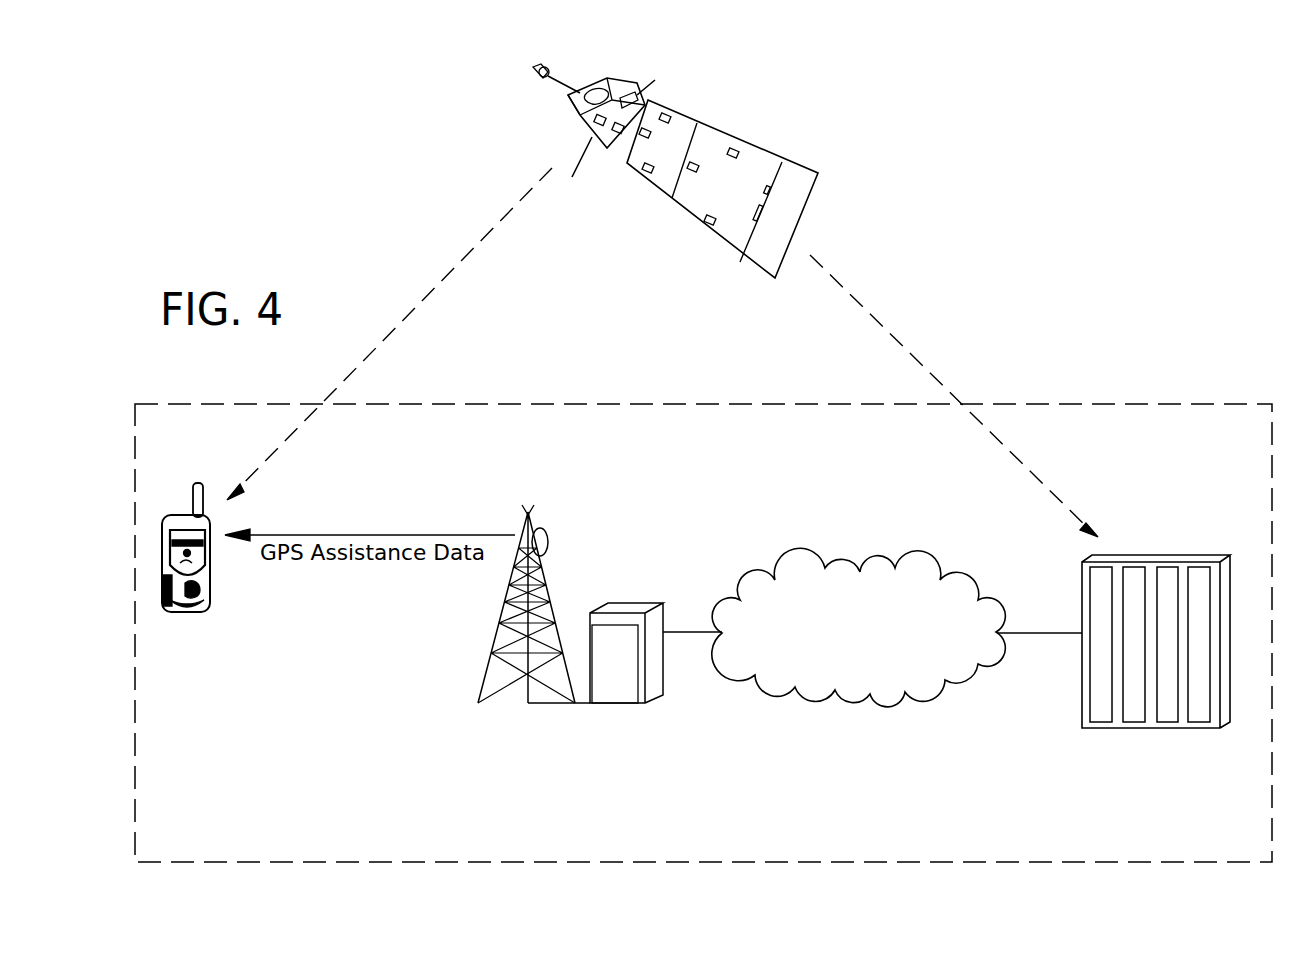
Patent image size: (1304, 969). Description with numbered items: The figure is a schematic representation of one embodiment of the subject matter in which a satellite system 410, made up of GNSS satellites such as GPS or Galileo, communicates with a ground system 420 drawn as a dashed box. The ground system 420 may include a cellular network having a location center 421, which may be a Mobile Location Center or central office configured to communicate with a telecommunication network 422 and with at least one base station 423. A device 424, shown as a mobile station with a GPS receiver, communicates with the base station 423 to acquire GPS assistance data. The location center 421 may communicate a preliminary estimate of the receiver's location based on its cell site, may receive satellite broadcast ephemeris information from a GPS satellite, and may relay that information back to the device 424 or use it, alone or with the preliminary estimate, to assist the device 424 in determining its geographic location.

The satellite system 410 is at (840, 222).
The ground system 420 is at (1112, 405).
The location center 421 is at (1140, 540).
The telecommunication network 422 is at (825, 570).
The base station 423 is at (547, 518).
The device 424 is at (180, 508).